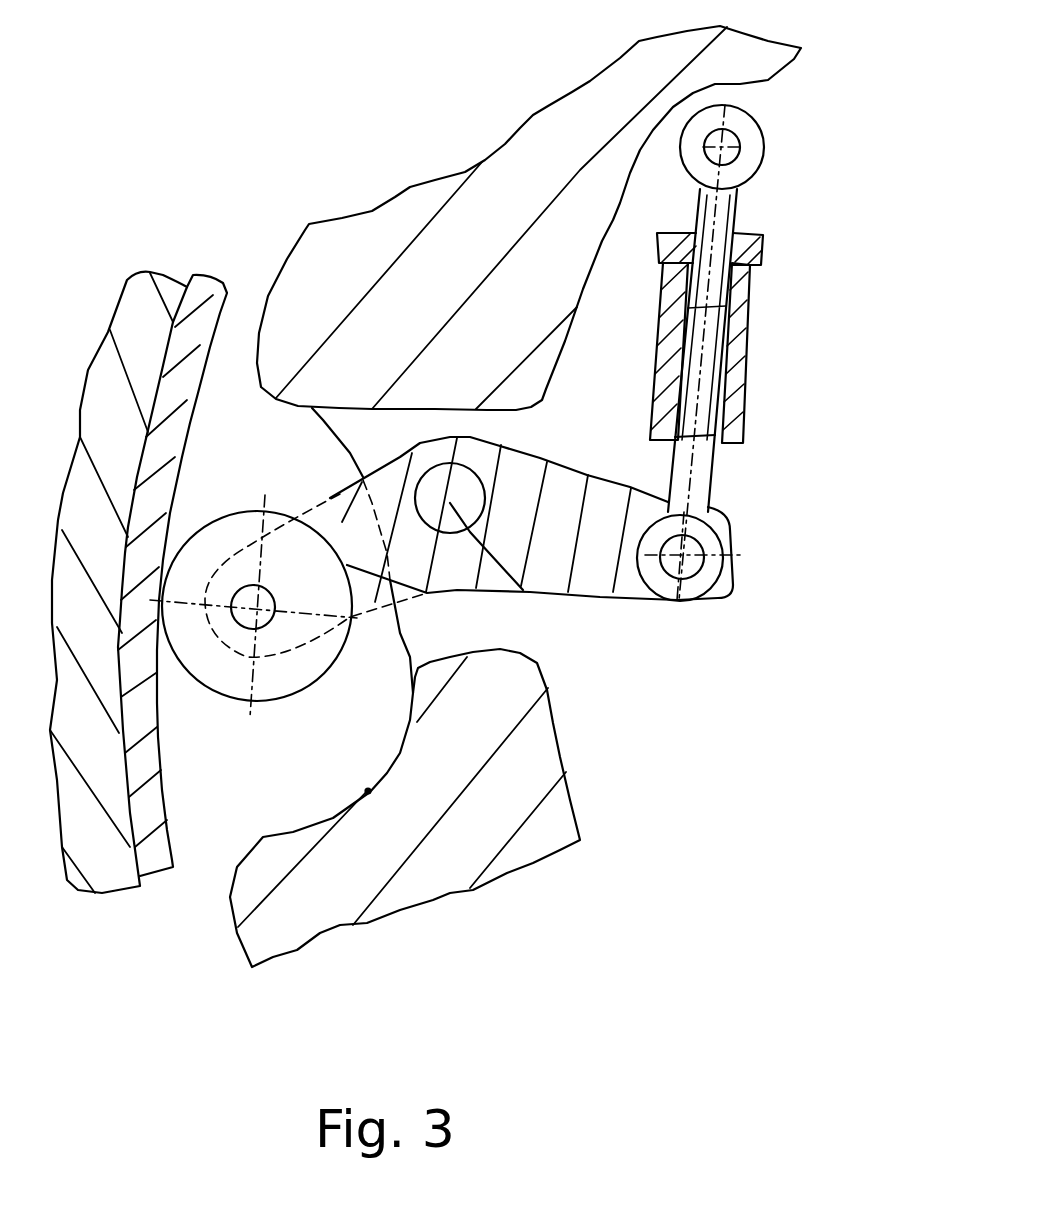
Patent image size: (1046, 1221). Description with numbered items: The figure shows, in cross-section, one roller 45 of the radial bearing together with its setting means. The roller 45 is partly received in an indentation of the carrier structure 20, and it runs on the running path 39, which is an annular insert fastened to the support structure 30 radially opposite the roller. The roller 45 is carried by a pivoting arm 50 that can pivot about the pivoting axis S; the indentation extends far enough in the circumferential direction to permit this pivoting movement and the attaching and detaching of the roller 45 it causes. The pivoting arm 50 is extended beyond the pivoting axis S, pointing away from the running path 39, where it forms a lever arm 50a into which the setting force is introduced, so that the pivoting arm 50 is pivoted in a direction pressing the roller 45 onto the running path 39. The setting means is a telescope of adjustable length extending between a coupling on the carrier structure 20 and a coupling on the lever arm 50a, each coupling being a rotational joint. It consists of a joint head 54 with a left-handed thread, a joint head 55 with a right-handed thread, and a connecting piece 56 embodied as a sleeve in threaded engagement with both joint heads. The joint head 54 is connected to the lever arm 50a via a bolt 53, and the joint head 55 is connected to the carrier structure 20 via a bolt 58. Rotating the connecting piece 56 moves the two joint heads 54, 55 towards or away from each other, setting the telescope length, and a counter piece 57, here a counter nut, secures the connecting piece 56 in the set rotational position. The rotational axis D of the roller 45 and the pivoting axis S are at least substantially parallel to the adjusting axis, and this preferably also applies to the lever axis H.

The carrier structure 20 is at (483, 218).
The support structure 30 is at (135, 310).
The running path 39 is at (203, 310).
The roller 45 is at (230, 675).
The rotational axis D is at (265, 613).
The pivoting arm 50 is at (430, 600).
The lever arm 50a is at (574, 527).
The pivoting axis S is at (523, 590).
The bolt 53 is at (690, 553).
The lever axis H is at (705, 572).
The joint head 54 is at (702, 477).
The joint head 55 is at (722, 215).
The connecting piece 56 is at (740, 352).
The counter piece 57 is at (748, 253).
The bolt 58 is at (732, 140).